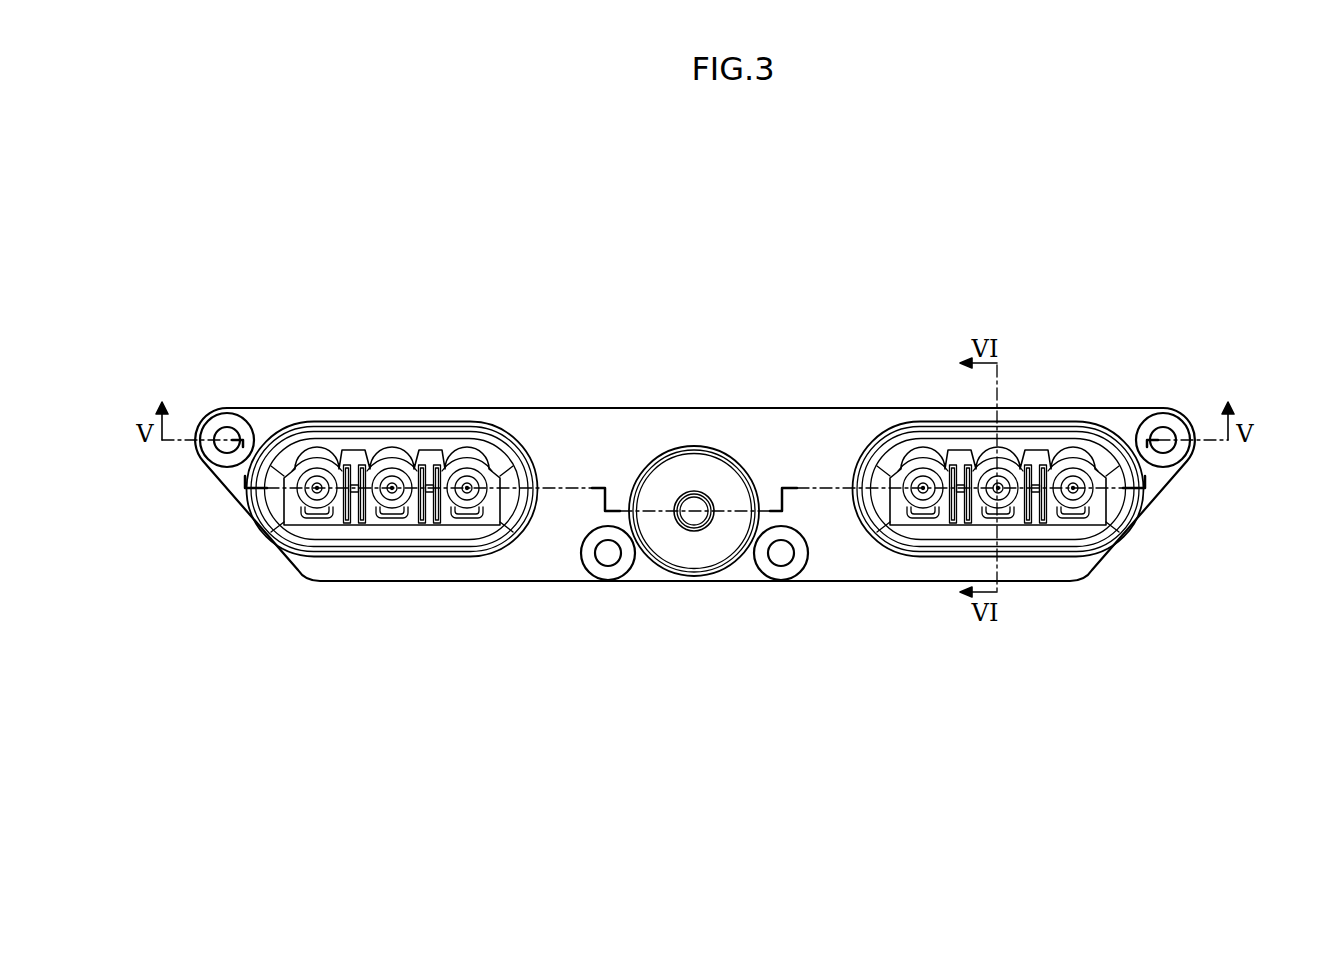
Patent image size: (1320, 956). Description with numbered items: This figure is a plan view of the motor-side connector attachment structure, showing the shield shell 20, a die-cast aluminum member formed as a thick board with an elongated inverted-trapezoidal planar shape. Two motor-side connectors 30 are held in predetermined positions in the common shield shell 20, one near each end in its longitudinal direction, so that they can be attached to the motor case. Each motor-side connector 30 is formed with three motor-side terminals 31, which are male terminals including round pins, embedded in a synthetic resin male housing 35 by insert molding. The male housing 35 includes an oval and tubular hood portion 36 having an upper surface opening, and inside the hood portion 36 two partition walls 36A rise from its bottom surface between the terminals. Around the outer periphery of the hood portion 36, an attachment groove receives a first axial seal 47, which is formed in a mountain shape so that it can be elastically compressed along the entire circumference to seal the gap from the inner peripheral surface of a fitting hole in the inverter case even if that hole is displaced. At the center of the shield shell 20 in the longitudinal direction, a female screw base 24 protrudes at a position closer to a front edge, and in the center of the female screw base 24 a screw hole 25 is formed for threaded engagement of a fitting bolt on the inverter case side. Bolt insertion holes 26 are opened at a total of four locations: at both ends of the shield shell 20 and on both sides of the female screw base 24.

The shield shell 20 is at (700, 407).
The female screw base 24 is at (686, 551).
The screw hole 25 is at (699, 518).
The bolt insertion hole 26 is at (207, 458).
The motor-side connector 30 is at (368, 409).
The motor-side terminal 31 is at (317, 485).
The male housing 35 is at (465, 432).
The hood portion 36 is at (1042, 430).
The partition wall 36A is at (947, 506).
The first axial seal 47 is at (421, 426).